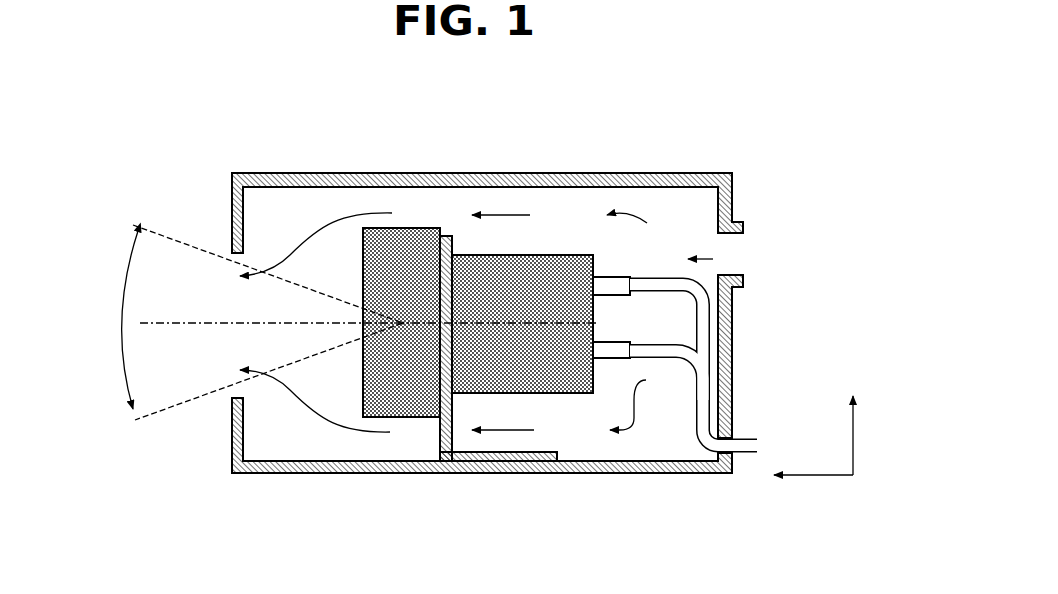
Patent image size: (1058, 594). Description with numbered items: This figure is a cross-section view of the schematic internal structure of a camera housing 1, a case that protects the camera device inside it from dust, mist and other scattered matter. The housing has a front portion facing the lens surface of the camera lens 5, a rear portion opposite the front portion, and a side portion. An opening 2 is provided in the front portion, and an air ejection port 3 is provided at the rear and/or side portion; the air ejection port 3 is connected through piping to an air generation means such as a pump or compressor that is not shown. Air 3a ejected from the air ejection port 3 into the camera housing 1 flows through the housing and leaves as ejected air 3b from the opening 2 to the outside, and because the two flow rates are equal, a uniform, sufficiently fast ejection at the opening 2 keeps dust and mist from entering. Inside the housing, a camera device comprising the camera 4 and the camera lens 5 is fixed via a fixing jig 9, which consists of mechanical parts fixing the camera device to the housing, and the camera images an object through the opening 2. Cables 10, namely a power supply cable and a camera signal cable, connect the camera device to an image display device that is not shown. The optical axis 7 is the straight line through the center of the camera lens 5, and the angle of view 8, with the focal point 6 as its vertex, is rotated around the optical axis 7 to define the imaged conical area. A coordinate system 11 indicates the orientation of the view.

The camera housing 1 is at (612, 473).
The opening 2 is at (228, 350).
The air ejection port 3 is at (753, 238).
The air at air ejection port 3a is at (699, 245).
The air at opening 3b is at (316, 260).
The camera 4 is at (540, 255).
The camera lens 5 is at (402, 228).
The focal point 6 is at (403, 325).
The optical axis 7 is at (177, 327).
The angle of view 8 is at (122, 335).
The fixing jig 9 is at (508, 473).
The cable 10 is at (661, 280).
The coordinate system 11 is at (837, 475).